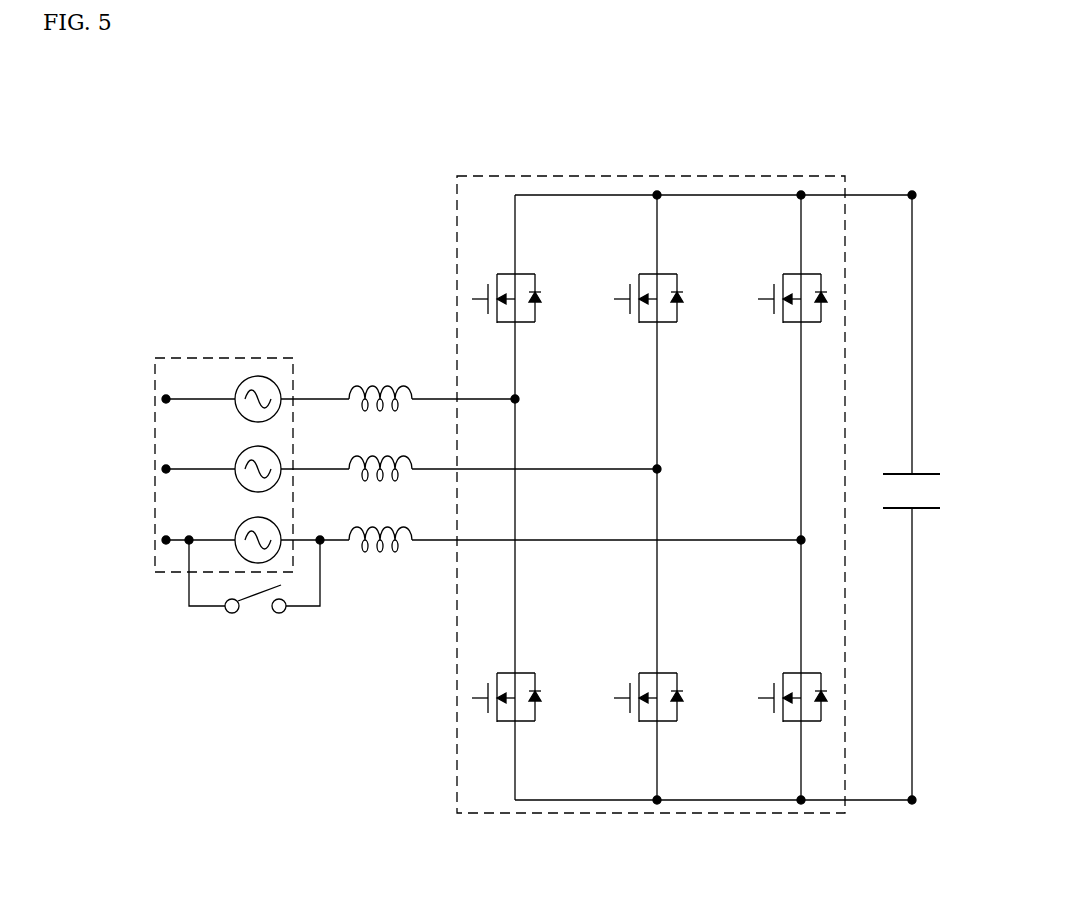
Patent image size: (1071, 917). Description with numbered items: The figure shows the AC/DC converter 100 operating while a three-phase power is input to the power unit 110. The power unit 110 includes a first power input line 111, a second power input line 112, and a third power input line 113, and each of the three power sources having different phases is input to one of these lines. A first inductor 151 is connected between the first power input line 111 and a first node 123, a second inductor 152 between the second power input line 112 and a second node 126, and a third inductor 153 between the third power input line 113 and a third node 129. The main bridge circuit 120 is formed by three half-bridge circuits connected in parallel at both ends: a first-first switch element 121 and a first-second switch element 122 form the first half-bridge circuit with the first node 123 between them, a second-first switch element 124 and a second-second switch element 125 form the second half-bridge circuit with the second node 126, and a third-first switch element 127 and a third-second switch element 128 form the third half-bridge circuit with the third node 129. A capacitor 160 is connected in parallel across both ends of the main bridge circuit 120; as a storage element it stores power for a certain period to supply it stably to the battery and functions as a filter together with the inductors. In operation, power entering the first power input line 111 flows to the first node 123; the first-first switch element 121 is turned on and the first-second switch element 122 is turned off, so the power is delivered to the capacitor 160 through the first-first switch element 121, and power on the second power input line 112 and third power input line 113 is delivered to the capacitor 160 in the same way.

The AC/DC converter 100 is at (272, 97).
The power unit 110 is at (250, 357).
The first power input line 111 is at (200, 402).
The second power input line 112 is at (200, 472).
The third power input line 113 is at (175, 544).
The first inductor 151 is at (366, 384).
The second inductor 152 is at (375, 455).
The third inductor 153 is at (380, 526).
The main bridge circuit 120 is at (768, 175).
The first-first switch element 121 is at (530, 274).
The first-second switch element 122 is at (530, 673).
The first node 123 is at (520, 399).
The second-first switch element 124 is at (672, 274).
The second-second switch element 125 is at (672, 673).
The second node 126 is at (660, 467).
The third-first switch element 127 is at (783, 323).
The third-second switch element 128 is at (783, 722).
The third node 129 is at (798, 538).
The capacitor 160 is at (918, 472).